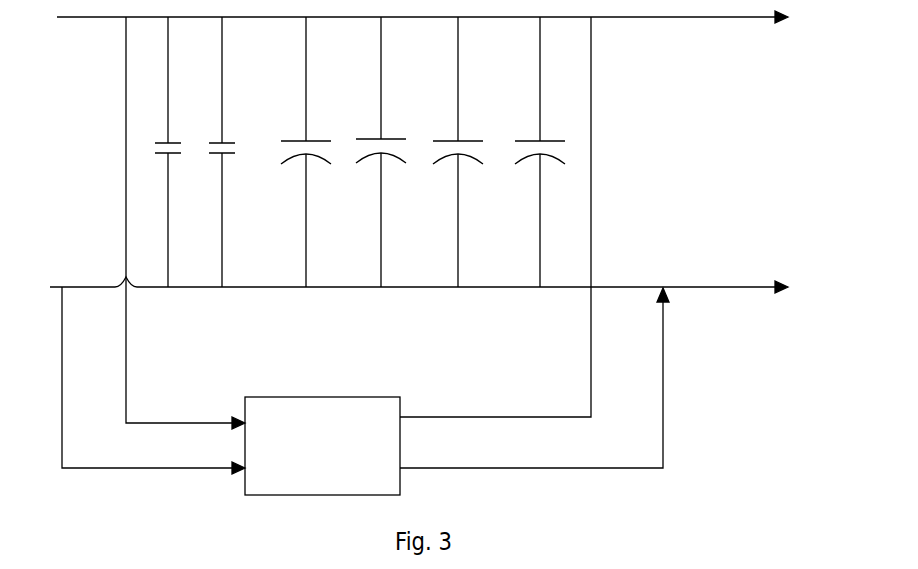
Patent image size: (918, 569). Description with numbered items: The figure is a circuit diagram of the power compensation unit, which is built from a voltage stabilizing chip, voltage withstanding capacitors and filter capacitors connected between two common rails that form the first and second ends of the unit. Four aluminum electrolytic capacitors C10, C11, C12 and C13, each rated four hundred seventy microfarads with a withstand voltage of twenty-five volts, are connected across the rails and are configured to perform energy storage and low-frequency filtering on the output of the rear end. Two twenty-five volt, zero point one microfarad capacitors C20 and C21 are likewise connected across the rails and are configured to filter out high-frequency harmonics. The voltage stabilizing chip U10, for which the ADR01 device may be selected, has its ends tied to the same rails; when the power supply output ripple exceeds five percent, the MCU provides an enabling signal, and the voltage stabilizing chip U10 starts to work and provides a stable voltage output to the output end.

The capacitor C20 is at (186, 152).
The capacitor C21 is at (244, 152).
The aluminum electrolytic capacitor C10 is at (318, 152).
The aluminum electrolytic capacitor C11 is at (391, 152).
The aluminum electrolytic capacitor C12 is at (470, 152).
The aluminum electrolytic capacitor C13 is at (552, 152).
The voltage stabilizing chip U10 is at (322, 426).